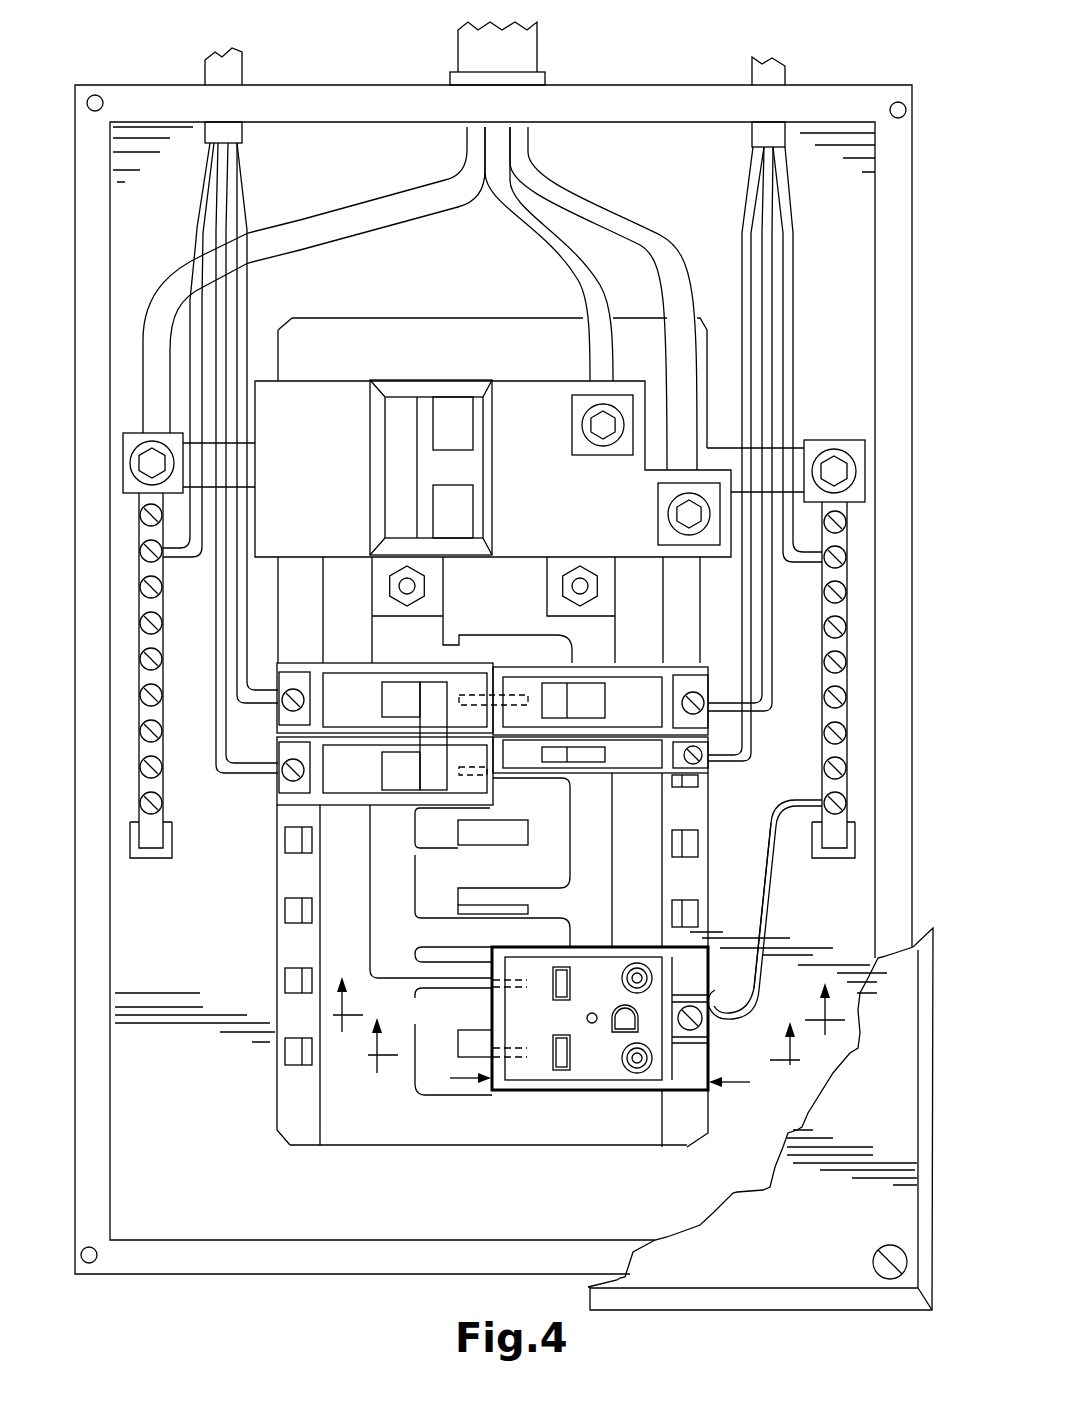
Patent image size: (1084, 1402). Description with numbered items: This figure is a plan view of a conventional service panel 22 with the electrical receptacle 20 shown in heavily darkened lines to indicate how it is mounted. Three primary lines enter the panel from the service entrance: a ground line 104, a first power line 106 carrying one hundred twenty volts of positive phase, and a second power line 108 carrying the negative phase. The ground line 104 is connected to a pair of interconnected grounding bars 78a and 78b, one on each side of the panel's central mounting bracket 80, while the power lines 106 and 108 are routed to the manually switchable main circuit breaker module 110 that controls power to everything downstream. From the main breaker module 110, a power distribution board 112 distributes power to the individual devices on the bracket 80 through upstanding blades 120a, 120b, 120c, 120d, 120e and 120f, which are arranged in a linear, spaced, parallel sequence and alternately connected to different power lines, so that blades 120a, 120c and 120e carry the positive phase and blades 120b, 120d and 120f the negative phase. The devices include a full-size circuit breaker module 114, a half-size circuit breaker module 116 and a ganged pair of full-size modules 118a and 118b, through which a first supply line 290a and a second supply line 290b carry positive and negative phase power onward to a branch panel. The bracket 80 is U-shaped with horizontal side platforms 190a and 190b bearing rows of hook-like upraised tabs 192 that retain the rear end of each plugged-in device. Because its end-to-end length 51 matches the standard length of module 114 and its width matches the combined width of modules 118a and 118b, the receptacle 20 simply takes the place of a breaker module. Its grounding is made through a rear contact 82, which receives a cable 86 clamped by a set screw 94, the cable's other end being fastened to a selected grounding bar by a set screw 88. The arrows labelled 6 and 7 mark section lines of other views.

The service panel 22 is at (155, 76).
The first supply line 290a is at (248, 217).
The second supply line 290b is at (228, 291).
The ground line 104 is at (386, 198).
The first power line 106 is at (552, 263).
The second power line 108 is at (607, 213).
The main circuit breaker module 110 is at (536, 374).
The full-size circuit breaker module 118a is at (347, 662).
The full-size circuit breaker module 118b is at (278, 785).
The upstanding blade 120a is at (470, 698).
The upstanding blade 120b is at (505, 782).
The upstanding blade 120c is at (458, 834).
The upstanding blade 120d is at (494, 919).
The upstanding blade 120e is at (480, 985).
The upstanding blade 120f is at (527, 1053).
The full-size circuit breaker module 114 is at (647, 665).
The half-size circuit breaker module 116 is at (630, 774).
The power distribution board 112 is at (613, 921).
The grounding bus 78a is at (178, 750).
The grounding bus 78b is at (818, 722).
The set screw 88 is at (815, 798).
The cable 86 is at (764, 916).
The rear contact 82 is at (713, 1000).
The set screw 94 is at (696, 1036).
The upraised tabs 192 is at (283, 988).
The side platform 190a is at (295, 1103).
The side platform 190b is at (680, 1128).
The central mounting bracket 80 is at (420, 1148).
The electrical receptacle 20 is at (598, 1100).
The end-to-end length 51 is at (738, 1084).
The section line 6- 6 is at (584, 1063).
The section line 7- 7 is at (589, 1025).